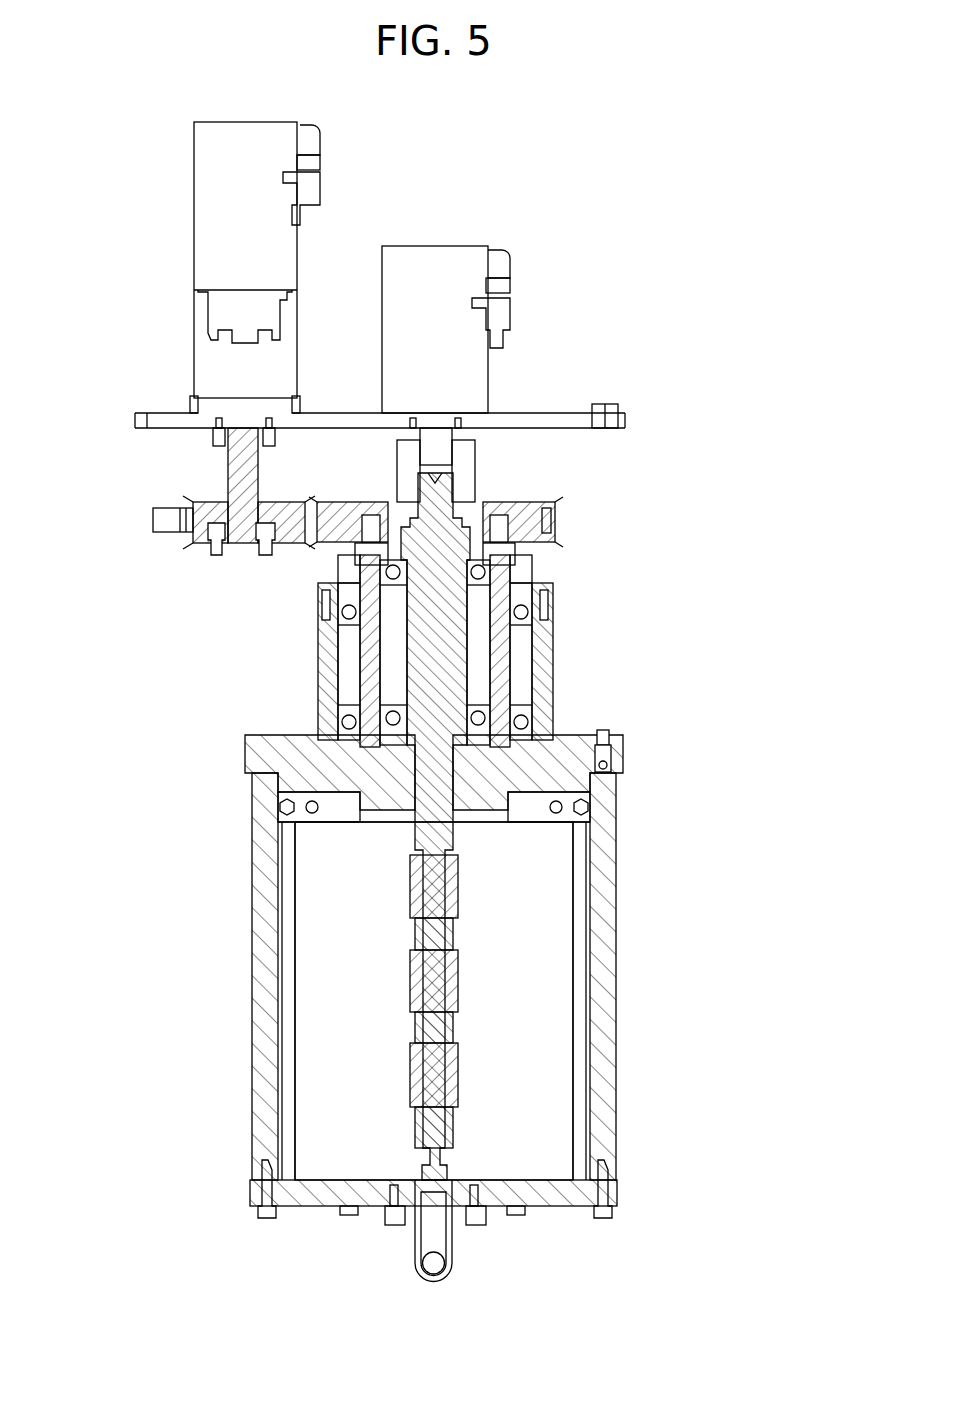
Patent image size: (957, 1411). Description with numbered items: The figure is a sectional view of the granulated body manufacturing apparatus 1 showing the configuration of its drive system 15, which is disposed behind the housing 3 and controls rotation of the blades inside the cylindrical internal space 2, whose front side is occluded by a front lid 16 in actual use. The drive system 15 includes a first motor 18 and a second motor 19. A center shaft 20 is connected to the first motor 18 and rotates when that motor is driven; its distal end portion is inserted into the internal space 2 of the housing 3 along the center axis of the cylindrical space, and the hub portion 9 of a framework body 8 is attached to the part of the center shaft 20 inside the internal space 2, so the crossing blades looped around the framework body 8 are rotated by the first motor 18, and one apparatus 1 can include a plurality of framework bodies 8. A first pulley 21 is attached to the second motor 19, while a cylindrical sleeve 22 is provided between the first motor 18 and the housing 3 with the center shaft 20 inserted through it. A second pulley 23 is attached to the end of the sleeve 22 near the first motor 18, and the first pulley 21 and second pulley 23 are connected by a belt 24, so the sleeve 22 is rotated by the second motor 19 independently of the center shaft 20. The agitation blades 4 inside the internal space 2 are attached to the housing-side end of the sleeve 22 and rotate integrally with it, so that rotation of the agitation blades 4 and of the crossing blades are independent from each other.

The manufacturing apparatus 1 is at (632, 797).
The internal space 2 is at (362, 1071).
The housing 3 is at (262, 843).
The agitation blades 4 is at (580, 872).
The framework body 8 is at (457, 902).
The hub portion 9 is at (561, 1001).
The drive system 15 is at (582, 254).
The front lid 16 is at (567, 1205).
The first motor 18 is at (455, 268).
The second motor 19 is at (213, 192).
The center shaft 20 is at (438, 605).
The first pulley 21 is at (210, 497).
The sleeve 22 is at (500, 655).
The second pulley 23 is at (522, 512).
The belt 24 is at (157, 522).